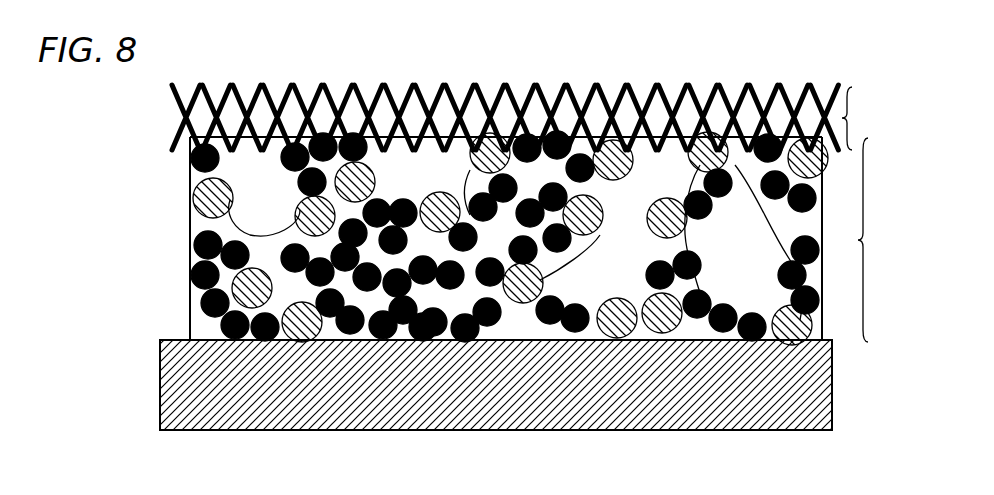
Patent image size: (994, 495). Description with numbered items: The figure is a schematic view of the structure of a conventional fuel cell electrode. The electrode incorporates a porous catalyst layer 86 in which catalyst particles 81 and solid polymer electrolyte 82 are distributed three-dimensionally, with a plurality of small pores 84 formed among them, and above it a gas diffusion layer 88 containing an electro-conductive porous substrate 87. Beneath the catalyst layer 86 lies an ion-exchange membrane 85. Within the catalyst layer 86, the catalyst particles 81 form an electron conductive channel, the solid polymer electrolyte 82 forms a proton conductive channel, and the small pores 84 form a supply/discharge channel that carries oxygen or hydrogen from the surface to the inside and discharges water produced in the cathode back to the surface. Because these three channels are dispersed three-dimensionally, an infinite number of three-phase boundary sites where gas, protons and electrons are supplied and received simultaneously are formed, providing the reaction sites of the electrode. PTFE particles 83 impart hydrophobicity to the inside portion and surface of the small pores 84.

The catalyst particles 81 is at (216, 147).
The solid polymer electrolyte 82 is at (788, 125).
The PTFE particles 83 is at (437, 191).
The small pores 84 is at (648, 160).
The ion-exchange membrane 85 is at (237, 431).
The porous catalyst layer 86 is at (546, 239).
The electro-conductive porous substrate 87 is at (283, 87).
The gas diffusion layer 88 is at (862, 118).